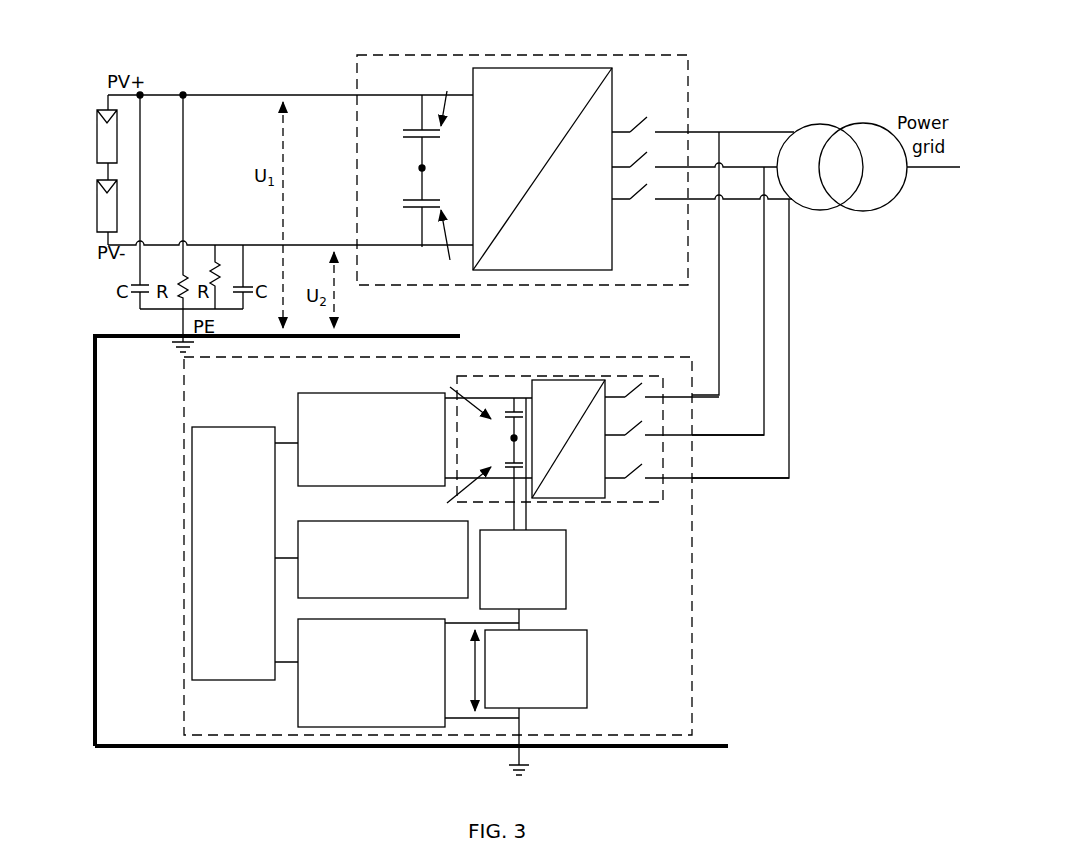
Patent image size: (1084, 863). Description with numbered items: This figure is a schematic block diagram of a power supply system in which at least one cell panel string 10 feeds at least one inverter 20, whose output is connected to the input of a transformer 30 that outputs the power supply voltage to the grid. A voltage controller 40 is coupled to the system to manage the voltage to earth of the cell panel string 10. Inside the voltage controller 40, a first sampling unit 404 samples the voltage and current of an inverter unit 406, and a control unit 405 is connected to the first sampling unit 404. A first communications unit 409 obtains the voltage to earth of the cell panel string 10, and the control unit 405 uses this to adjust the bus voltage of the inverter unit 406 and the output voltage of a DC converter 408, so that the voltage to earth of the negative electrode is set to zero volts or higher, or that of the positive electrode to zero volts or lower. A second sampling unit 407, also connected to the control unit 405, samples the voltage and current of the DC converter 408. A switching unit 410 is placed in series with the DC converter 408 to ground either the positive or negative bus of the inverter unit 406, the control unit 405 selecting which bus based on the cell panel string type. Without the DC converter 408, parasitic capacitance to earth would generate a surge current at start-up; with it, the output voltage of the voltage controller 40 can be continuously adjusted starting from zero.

The cell panel string 10 is at (78, 112).
The inverter 20 is at (710, 49).
The transformer 30 is at (868, 184).
The voltage controller 40 is at (695, 562).
The first sampling unit 404 is at (371, 439).
The control unit 405 is at (233, 553).
The inverter unit 406 is at (580, 509).
The second sampling unit 407 is at (371, 673).
The DC converter 408 is at (536, 669).
The first communications unit 409 is at (383, 559).
The switching unit 410 is at (523, 569).